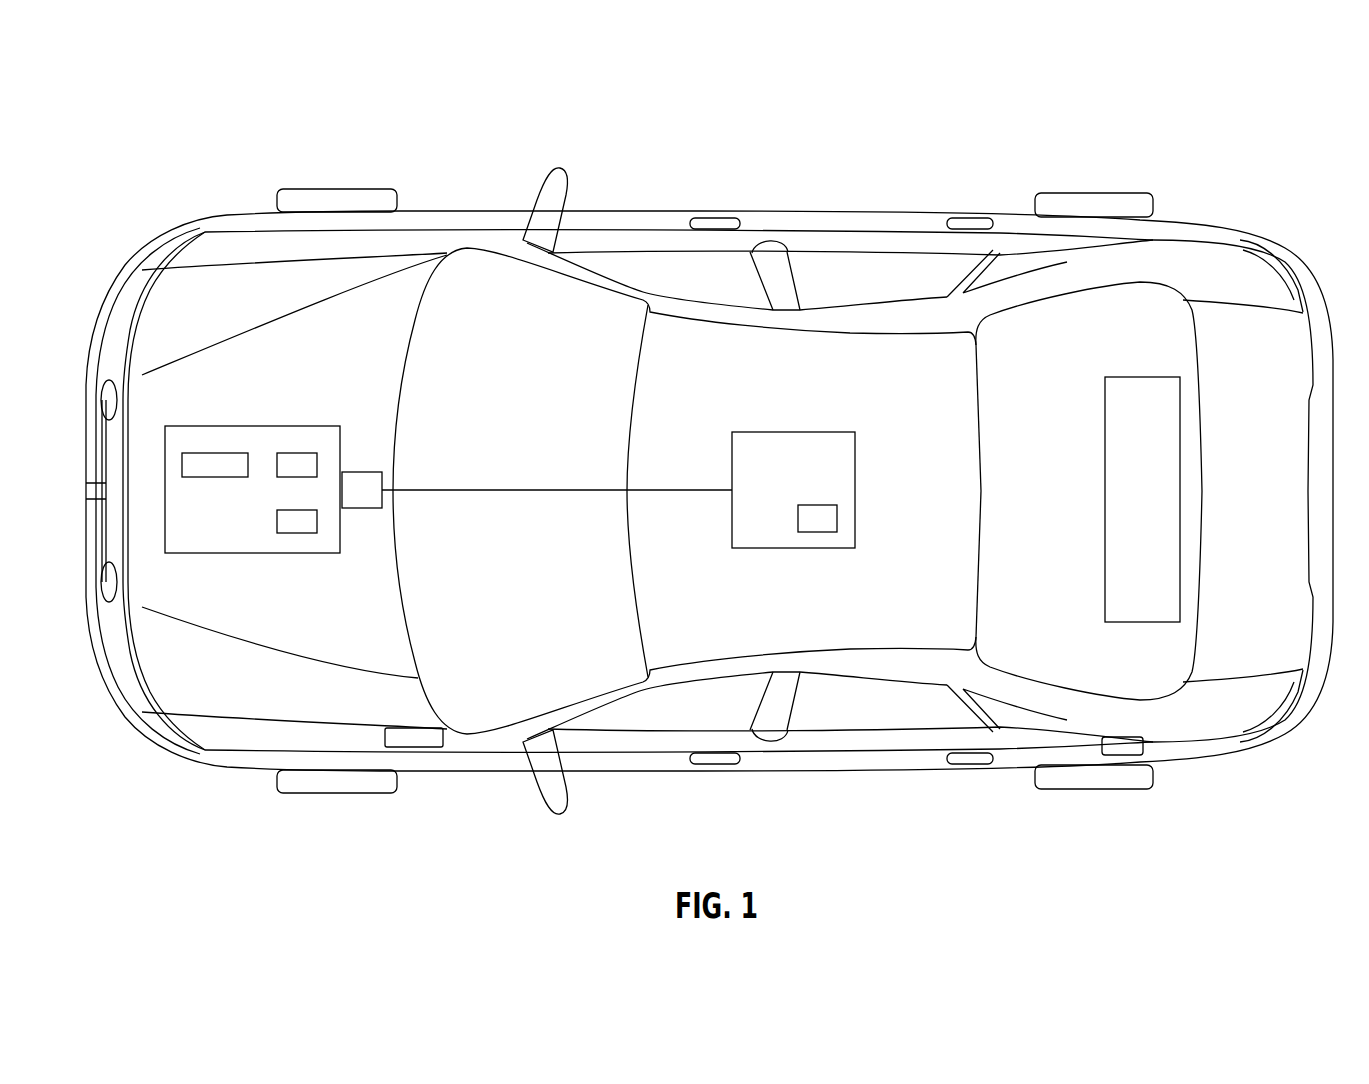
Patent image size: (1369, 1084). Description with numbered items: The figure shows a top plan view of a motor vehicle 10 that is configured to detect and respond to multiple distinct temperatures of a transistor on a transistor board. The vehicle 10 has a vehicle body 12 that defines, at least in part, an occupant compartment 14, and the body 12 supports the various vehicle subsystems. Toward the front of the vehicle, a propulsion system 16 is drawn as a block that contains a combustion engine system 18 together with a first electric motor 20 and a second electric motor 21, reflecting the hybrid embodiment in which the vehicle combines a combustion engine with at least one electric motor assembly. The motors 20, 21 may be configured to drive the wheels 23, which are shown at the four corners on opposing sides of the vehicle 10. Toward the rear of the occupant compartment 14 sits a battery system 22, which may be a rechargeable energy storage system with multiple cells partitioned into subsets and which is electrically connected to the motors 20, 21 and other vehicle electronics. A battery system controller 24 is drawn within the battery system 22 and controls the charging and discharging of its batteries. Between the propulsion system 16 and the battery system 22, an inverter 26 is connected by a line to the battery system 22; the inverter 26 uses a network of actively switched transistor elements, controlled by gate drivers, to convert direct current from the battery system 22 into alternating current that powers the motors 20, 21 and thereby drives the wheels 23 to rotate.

The motor vehicle 10 is at (146, 121).
The vehicle body 12 is at (805, 213).
The occupant compartment 14 is at (840, 655).
The propulsion system 16 is at (242, 425).
The combustion engine system 18 is at (215, 480).
The first electric motor 20 is at (297, 452).
The second electric motor 21 is at (297, 535).
The battery system 22 is at (793, 432).
The wheels 23 is at (337, 188).
The battery system controller 24 is at (815, 533).
The inverter 26 is at (393, 480).